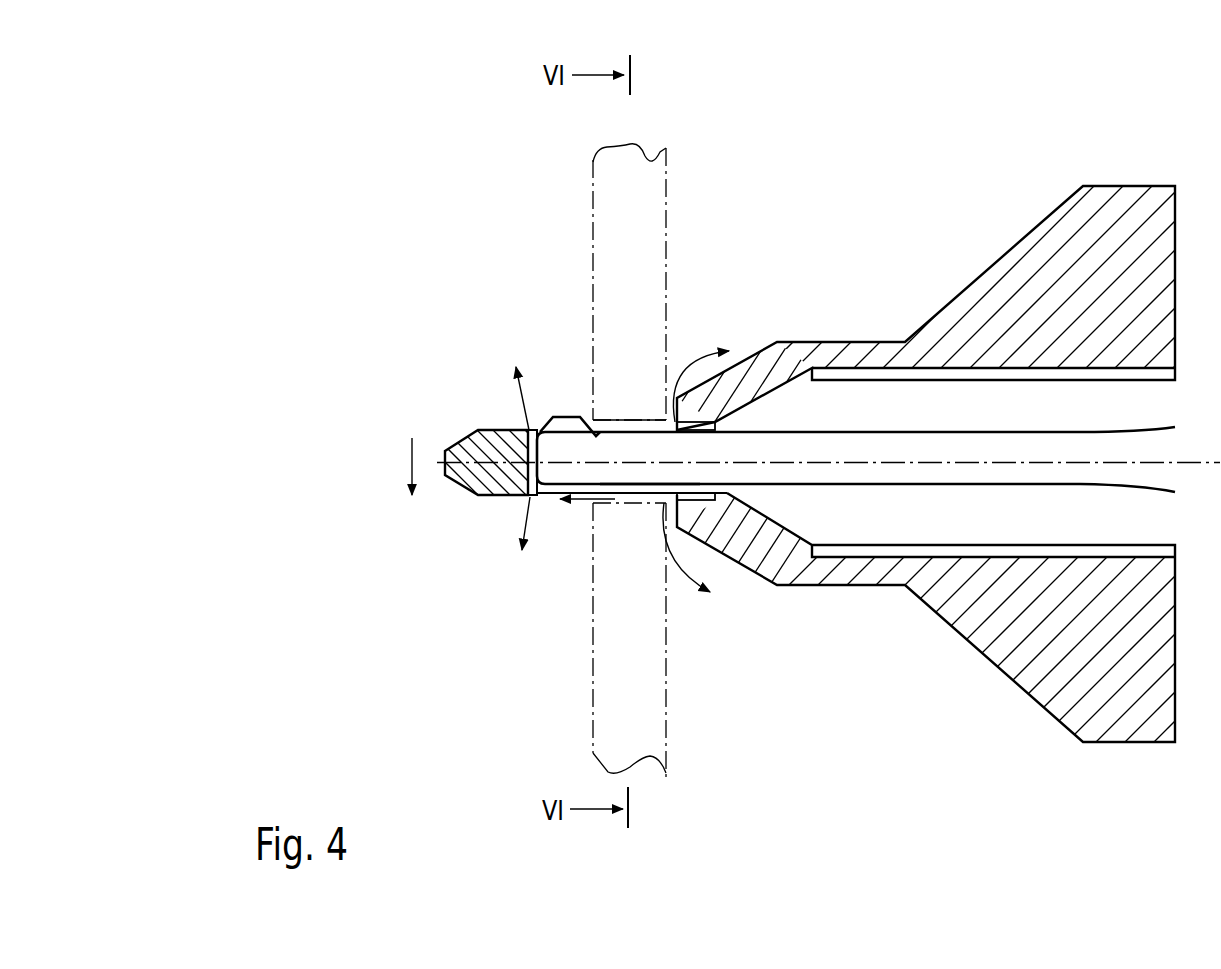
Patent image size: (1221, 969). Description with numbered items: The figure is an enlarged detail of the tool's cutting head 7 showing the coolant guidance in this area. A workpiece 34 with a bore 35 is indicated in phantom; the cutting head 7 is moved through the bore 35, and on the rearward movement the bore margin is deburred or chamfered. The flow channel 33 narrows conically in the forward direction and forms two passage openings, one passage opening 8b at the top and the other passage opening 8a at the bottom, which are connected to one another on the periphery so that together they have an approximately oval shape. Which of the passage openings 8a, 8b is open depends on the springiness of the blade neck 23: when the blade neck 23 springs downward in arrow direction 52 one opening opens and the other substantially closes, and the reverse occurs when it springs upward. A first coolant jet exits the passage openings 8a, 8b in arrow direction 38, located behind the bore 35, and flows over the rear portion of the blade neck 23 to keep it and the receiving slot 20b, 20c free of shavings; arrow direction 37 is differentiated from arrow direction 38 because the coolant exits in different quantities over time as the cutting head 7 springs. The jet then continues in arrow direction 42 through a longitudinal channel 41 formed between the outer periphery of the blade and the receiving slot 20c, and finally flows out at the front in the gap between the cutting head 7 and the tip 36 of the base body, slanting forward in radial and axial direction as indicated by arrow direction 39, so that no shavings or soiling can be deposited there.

The cutting head 7 is at (561, 417).
The passage opening 8a is at (746, 572).
The passage opening 8b is at (704, 427).
The receiving slot 20b is at (1103, 742).
The receiving slot 20c is at (547, 485).
The blade neck 23 is at (1019, 455).
The flow channel 33 is at (1117, 368).
The workpiece 34 is at (632, 242).
The bore 35 is at (627, 420).
The tip 36 is at (547, 484).
The arrow direction 37 is at (832, 517).
The arrow direction 38 is at (697, 363).
The arrow direction 39 is at (421, 498).
The longitudinal channel 41 is at (639, 486).
The arrow direction 42 is at (580, 500).
The arrow direction 52 is at (410, 457).